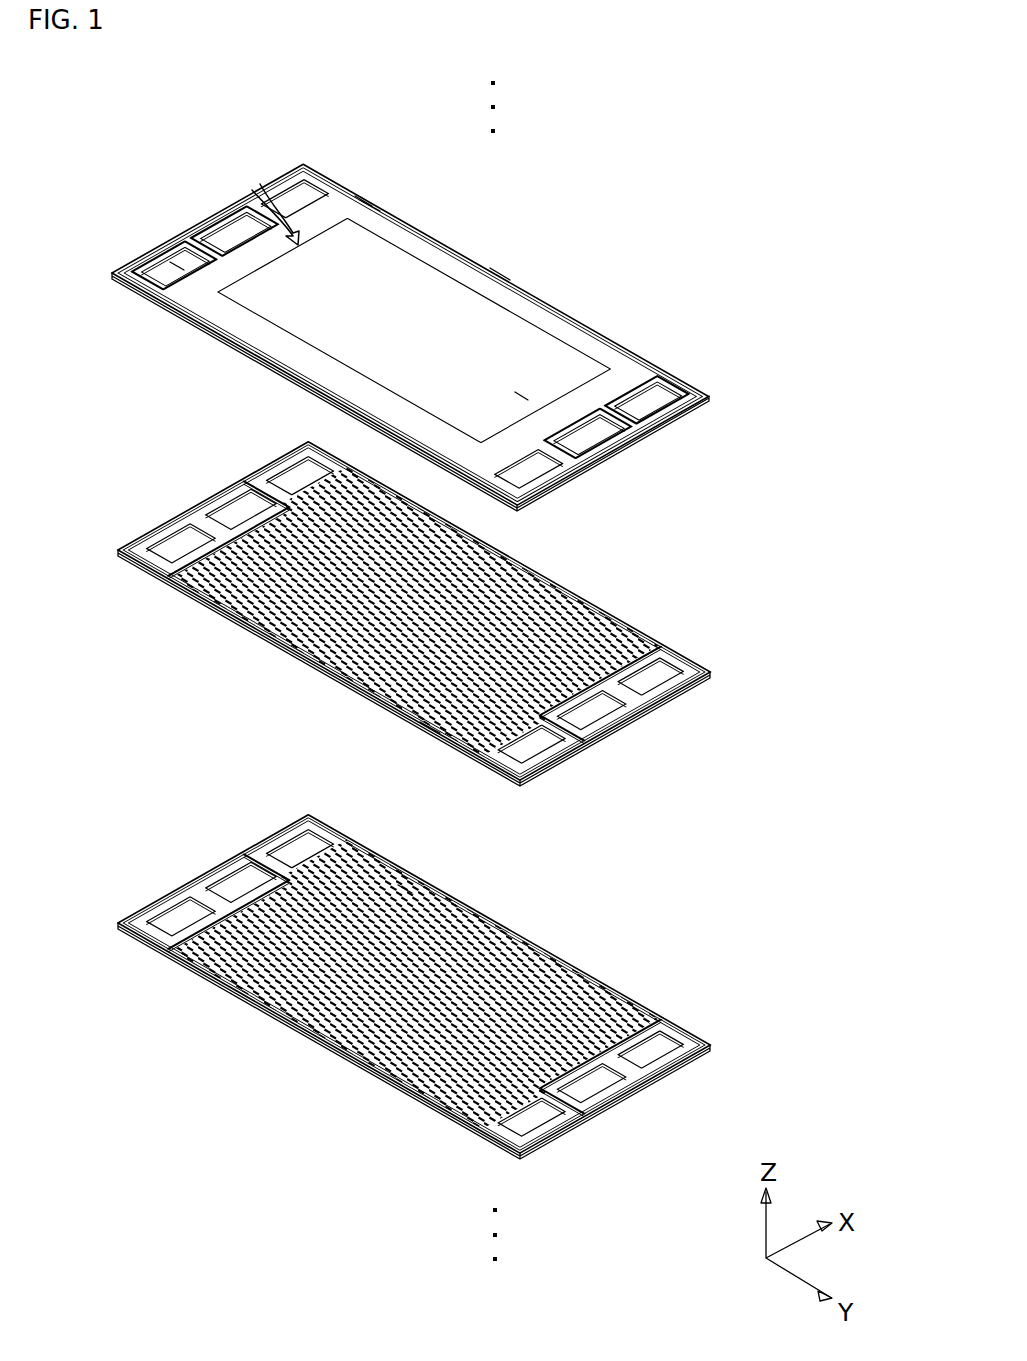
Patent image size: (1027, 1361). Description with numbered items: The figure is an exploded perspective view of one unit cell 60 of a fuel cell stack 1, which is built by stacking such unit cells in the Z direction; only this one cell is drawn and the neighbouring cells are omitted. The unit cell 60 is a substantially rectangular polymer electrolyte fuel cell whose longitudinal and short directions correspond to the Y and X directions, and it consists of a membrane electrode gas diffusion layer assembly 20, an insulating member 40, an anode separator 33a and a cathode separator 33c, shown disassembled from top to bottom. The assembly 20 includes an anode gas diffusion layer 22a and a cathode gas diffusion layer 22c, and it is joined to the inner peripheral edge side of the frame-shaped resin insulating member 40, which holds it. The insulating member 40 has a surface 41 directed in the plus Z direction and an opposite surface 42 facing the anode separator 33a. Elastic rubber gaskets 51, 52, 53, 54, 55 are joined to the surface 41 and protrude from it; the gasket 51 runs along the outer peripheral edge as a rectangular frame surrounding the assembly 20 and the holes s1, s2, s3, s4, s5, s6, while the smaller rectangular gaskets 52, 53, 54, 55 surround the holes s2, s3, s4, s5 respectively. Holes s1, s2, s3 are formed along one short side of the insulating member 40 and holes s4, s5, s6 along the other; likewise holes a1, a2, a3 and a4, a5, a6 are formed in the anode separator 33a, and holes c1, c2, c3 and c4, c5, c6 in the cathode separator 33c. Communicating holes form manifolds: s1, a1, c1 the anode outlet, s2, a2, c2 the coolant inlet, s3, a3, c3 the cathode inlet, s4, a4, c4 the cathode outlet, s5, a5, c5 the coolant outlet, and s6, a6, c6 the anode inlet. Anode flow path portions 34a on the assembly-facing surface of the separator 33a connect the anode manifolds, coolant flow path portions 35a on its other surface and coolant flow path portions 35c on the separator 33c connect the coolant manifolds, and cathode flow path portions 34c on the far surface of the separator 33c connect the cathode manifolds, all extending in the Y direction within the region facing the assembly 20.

The fuel cell stack 1 is at (786, 142).
The membrane electrode gas diffusion layer assembly (MEGA) 20 is at (237, 228).
The anode gas diffusion layer 22a is at (522, 398).
The cathode gas diffusion layer 22c is at (177, 267).
The insulating member 40 is at (728, 398).
The surface 41 is at (455, 257).
The surface 42 is at (365, 208).
The gasket 51 is at (503, 276).
The gasket 52 is at (247, 283).
The gasket 53 is at (184, 291).
The gasket 54 is at (628, 395).
The gasket 55 is at (588, 418).
The unit cell 60 is at (738, 323).
The hole s1 is at (297, 197).
The hole s2 is at (236, 229).
The hole s3 is at (165, 246).
The hole s4 is at (655, 398).
The hole s5 is at (588, 433).
The hole s6 is at (530, 455).
The anode separator 33a is at (162, 498).
The anode flow path portions 34a is at (395, 638).
The coolant flow path portions 35a is at (430, 718).
The hole a1 is at (293, 472).
The hole a2 is at (232, 505).
The hole a3 is at (175, 545).
The hole a4 is at (658, 685).
The hole a5 is at (595, 713).
The hole a6 is at (535, 752).
The cathode separator 33c is at (162, 871).
The cathode flow path portions 34c is at (205, 968).
The coolant flow path portions 35c is at (405, 890).
The hole c1 is at (293, 845).
The hole c2 is at (233, 878).
The hole c3 is at (178, 918).
The hole c4 is at (658, 1058).
The hole c5 is at (598, 1087).
The hole c6 is at (535, 1125).